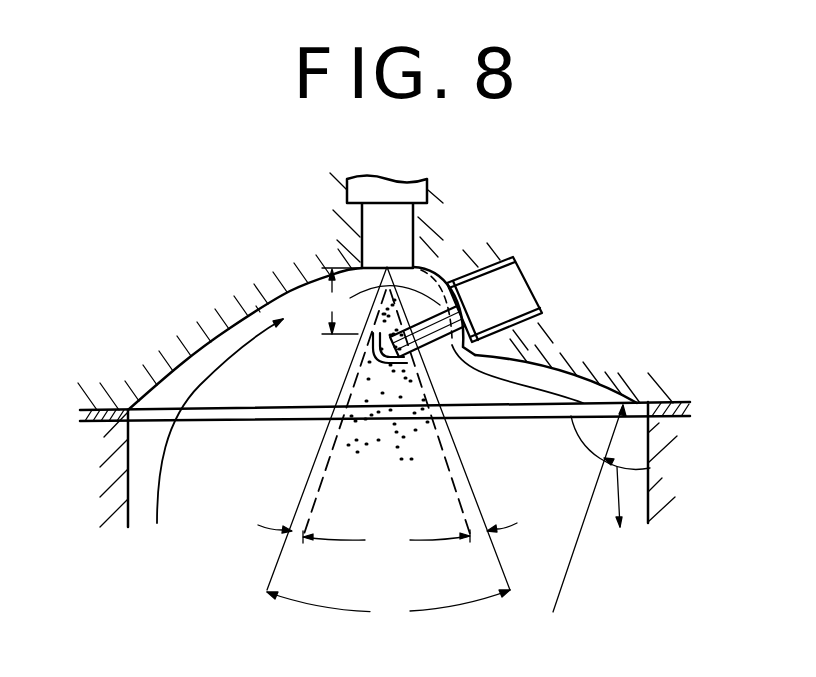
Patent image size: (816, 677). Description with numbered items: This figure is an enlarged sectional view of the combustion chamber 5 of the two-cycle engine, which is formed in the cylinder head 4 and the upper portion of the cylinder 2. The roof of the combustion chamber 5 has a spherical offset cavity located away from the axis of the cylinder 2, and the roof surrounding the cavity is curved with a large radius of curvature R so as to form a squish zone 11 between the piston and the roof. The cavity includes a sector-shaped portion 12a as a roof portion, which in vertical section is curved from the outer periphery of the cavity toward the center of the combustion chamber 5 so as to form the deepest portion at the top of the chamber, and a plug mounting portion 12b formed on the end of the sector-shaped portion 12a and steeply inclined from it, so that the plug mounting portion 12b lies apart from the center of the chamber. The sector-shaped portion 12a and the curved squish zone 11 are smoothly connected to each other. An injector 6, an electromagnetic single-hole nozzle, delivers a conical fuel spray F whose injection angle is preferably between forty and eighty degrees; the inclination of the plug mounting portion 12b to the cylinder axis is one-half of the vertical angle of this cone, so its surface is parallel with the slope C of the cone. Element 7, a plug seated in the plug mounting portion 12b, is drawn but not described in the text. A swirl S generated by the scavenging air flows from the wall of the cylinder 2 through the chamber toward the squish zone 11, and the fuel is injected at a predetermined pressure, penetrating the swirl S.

The cylinder 2 is at (657, 500).
The cylinder head 4 is at (172, 362).
The combustion chamber 5 is at (293, 365).
The injector 6 is at (405, 227).
The auxiliary nozzle 7 is at (513, 276).
The squish zone 11 is at (572, 358).
The sector-shaped portion 12a is at (258, 311).
The plug mounting portion 12b is at (500, 340).
The swirl S is at (156, 506).
The fuel spray F is at (309, 445).
The slope of the cone C is at (468, 480).
The radius of curvature R is at (601, 508).